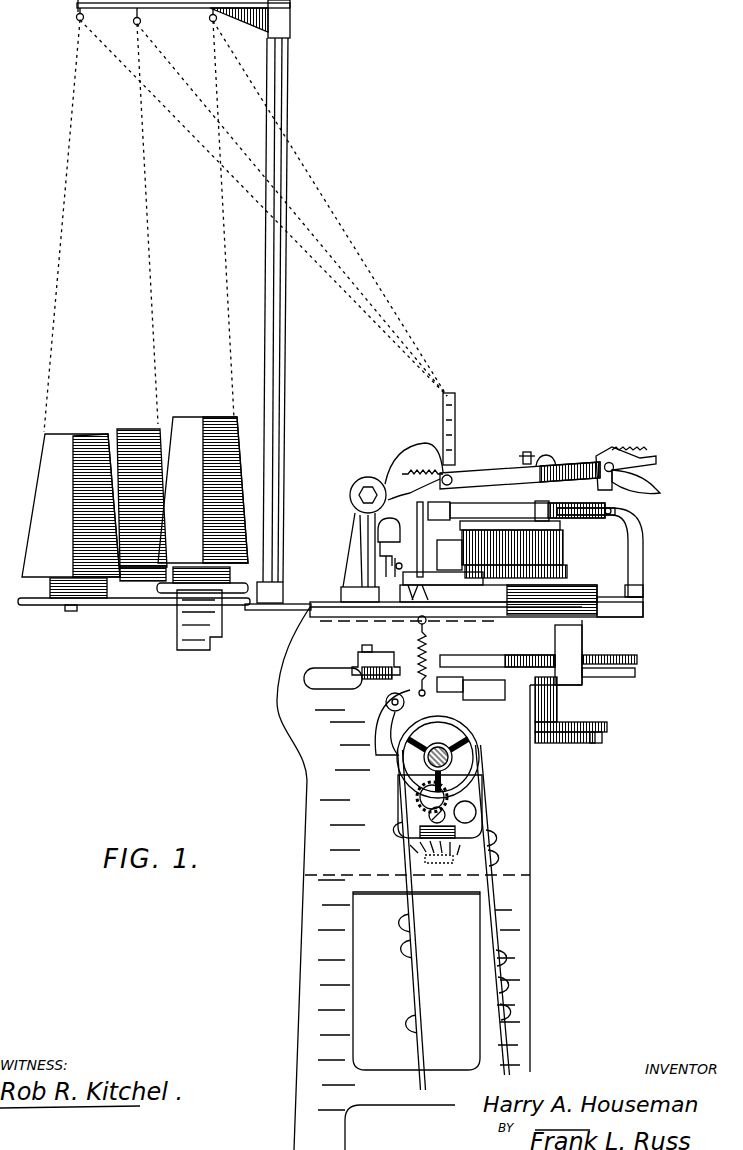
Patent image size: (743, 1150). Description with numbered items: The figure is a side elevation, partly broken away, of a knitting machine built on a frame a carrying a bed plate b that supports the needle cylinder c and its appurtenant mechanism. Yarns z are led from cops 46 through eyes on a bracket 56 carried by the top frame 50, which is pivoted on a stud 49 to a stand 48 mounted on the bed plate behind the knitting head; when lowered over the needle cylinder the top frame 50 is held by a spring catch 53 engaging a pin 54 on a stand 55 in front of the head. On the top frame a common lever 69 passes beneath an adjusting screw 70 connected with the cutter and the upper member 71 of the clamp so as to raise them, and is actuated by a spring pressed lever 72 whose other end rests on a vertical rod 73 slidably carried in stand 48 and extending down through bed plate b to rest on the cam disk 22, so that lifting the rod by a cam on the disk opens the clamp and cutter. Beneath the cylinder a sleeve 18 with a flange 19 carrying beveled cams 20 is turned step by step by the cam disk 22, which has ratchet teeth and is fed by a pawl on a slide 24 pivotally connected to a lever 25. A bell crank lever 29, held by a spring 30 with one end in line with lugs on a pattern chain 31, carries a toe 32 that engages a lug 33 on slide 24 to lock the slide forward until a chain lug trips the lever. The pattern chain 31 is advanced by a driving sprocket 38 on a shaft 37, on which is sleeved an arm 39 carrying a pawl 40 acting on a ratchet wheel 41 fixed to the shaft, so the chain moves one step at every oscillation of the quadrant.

The cops 46 is at (118, 432).
The yarns z is at (343, 268).
The bracket 56 is at (455, 400).
The spring pressed lever 72 is at (417, 470).
The stud 49 is at (362, 478).
The common lever 69 is at (473, 468).
The adjusting screw 70 is at (524, 450).
The upper member of the clamp 71 is at (542, 455).
The top frame 50 is at (586, 464).
The spring catch 53 is at (628, 490).
The pin 54 is at (620, 510).
The vertical rod 73 is at (415, 522).
The stand 48 is at (355, 541).
The needle cylinder c is at (565, 553).
The stand 55 is at (638, 580).
The bed plate b is at (645, 607).
The spring 30 is at (420, 668).
The cam disk 22 is at (625, 656).
The slide 24 is at (622, 676).
The lever 25 is at (370, 676).
The toe 32 is at (455, 692).
The lug 33 is at (495, 688).
The sleeve 18 is at (560, 705).
The bell crank lever 29 is at (375, 742).
The cams 20 is at (606, 730).
The driving sprocket 38 is at (465, 742).
The shaft 37 is at (480, 761).
The flange 19 is at (590, 745).
The ratchet wheel 41 is at (450, 795).
The pawl 40 is at (477, 812).
The arm 39 is at (460, 839).
The frame a is at (305, 838).
The pattern chain 31 is at (490, 923).